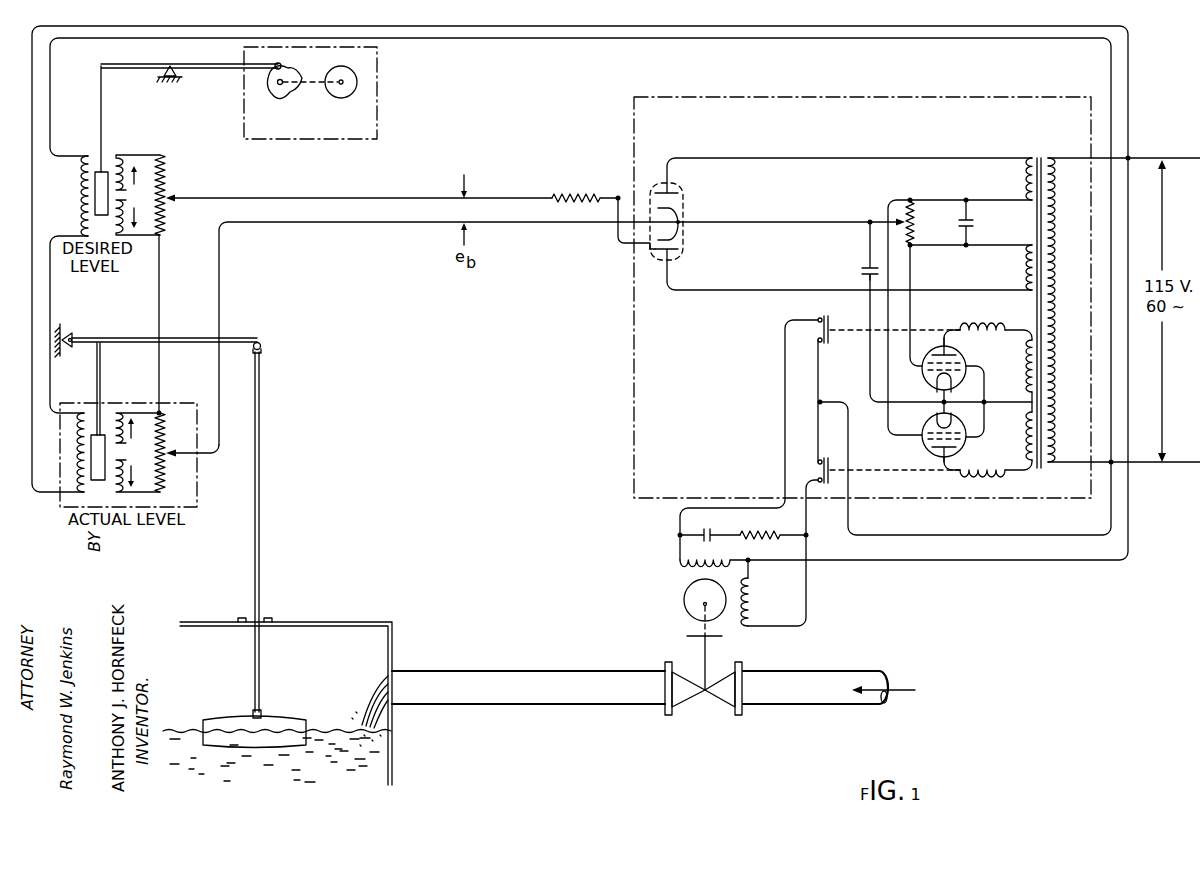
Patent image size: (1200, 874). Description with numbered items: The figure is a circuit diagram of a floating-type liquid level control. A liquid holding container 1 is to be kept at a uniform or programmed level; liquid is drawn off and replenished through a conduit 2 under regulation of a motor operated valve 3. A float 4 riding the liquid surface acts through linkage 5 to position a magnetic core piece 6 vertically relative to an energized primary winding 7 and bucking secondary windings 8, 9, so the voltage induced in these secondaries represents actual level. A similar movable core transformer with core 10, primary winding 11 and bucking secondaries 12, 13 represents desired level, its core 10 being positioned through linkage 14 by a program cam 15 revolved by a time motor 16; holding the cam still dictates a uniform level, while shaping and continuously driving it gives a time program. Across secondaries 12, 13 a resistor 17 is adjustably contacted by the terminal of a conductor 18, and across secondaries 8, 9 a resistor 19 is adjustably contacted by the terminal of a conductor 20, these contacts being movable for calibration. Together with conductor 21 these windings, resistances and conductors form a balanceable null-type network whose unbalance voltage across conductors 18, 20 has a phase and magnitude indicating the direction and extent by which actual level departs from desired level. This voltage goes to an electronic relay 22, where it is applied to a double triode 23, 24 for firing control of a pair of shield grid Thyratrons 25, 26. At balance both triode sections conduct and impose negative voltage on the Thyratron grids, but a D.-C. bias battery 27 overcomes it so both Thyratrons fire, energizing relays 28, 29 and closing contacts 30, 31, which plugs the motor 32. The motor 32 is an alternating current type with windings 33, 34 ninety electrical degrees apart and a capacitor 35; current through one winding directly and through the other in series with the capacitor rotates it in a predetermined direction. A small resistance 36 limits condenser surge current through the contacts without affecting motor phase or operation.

The liquid holding container 1 is at (393, 776).
The conduit 2 is at (478, 705).
The motor operated valve 3 is at (624, 661).
The float 4 is at (277, 718).
The linkage 5 is at (114, 338).
The magnetic core piece 6 is at (102, 435).
The primary winding 7 is at (72, 455).
The secondary winding 8 is at (127, 443).
The secondary winding 9 is at (127, 461).
The core 10 is at (97, 172).
The primary winding 11 is at (76, 190).
The secondary winding 12 is at (126, 190).
The secondary winding 13 is at (126, 201).
The linkage 14 is at (118, 70).
The program cam 15 is at (278, 100).
The time motor 16 is at (362, 76).
The resistor 17 is at (168, 160).
The conductor 18 is at (206, 198).
The resistor 19 is at (166, 438).
The conductor 20 is at (210, 458).
The conductor 21 is at (160, 290).
The electronic relay 22 is at (862, 297).
The double triode section 23 is at (684, 195).
The double triode section 24 is at (684, 252).
The shield grid Thyratron 25 is at (968, 358).
The shield grid Thyratron 26 is at (968, 445).
The D.-C. bias battery 27 is at (859, 251).
The relay 28 is at (988, 325).
The relay 29 is at (988, 478).
The contact 30 is at (820, 438).
The contact 31 is at (854, 542).
The motor 32 is at (672, 596).
The motor winding 33 is at (756, 593).
The motor winding 34 is at (704, 559).
The capacitor 35 is at (709, 526).
The resistance 36 is at (773, 525).